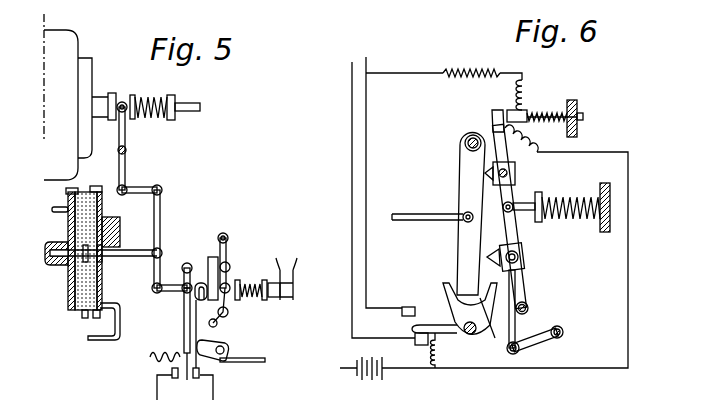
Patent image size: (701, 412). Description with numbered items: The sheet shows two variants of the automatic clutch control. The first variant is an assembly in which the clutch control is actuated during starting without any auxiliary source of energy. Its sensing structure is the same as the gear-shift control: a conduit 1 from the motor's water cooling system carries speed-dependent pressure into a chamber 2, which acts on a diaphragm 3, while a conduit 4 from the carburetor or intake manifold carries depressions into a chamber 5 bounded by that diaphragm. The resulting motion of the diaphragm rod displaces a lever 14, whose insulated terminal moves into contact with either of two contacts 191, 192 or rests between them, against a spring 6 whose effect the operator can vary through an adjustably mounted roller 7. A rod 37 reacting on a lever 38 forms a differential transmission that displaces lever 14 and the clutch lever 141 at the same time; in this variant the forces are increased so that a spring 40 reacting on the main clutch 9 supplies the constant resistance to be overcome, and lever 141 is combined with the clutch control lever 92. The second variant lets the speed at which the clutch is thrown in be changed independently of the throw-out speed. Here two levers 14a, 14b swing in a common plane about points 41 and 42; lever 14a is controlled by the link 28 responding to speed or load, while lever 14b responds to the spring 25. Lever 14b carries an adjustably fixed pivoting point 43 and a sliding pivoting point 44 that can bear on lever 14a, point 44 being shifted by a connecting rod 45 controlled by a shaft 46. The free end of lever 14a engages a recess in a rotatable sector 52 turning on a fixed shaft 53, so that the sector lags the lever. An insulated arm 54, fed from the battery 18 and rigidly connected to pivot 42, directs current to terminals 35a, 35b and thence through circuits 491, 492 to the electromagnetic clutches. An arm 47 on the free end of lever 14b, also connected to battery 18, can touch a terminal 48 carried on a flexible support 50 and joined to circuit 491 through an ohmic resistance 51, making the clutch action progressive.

In FIG. 5, the conduit 1 is at (52, 209).
In FIG. 5, the chamber 2 is at (68, 278).
In FIG. 5, the diaphragm 3 is at (80, 292).
In FIG. 5, the conduit 4 is at (104, 332).
In FIG. 5, the chamber 5 is at (104, 281).
In FIG. 5, the spring 6 is at (251, 283).
In FIG. 5, the adjustably mounted roller 7 is at (203, 283).
In FIG. 5, the main clutch 9 is at (103, 96).
In FIG. 5, the clutch control lever 92 is at (124, 172).
In FIG. 5, the lever 141 is at (164, 148).
In FIG. 5, the lever 14 is at (186, 322).
In FIG. 6, the lever 14a is at (467, 190).
In FIG. 6, the lever 14b is at (513, 230).
In FIG. 6, the battery 18 is at (360, 372).
In FIG. 5, the contact 191 is at (156, 381).
In FIG. 5, the contact 192 is at (215, 378).
In FIG. 5, the spring 25 is at (151, 107).
In FIG. 6, the spring 25 is at (584, 196).
In FIG. 6, the link 28 is at (433, 217).
In FIG. 6, the terminal 35a is at (405, 307).
In FIG. 6, the terminal 35b is at (407, 349).
In FIG. 5, the rod 37 is at (133, 250).
In FIG. 5, the lever 38 is at (157, 218).
In FIG. 5, the spring 40 is at (156, 92).
In FIG. 6, the pivot point 41 is at (465, 144).
In FIG. 6, the pivot point 42 is at (528, 306).
In FIG. 6, the pivoting point 43 is at (516, 172).
In FIG. 6, the pivoting point 44 is at (528, 263).
In FIG. 6, the connecting rod 45 is at (520, 330).
In FIG. 6, the shaft 46 is at (566, 333).
In FIG. 6, the arm 47 is at (492, 118).
In FIG. 6, the terminal 48 is at (510, 110).
In FIG. 6, the circuit 491 is at (367, 70).
In FIG. 6, the circuit 492 is at (350, 62).
In FIG. 6, the flexible support 50 is at (548, 114).
In FIG. 6, the ohmic resistance 51 is at (457, 72).
In FIG. 6, the rotatable sector 52 is at (501, 351).
In FIG. 6, the fixed shaft 53 is at (470, 322).
In FIG. 6, the insulated arm 54 is at (415, 330).